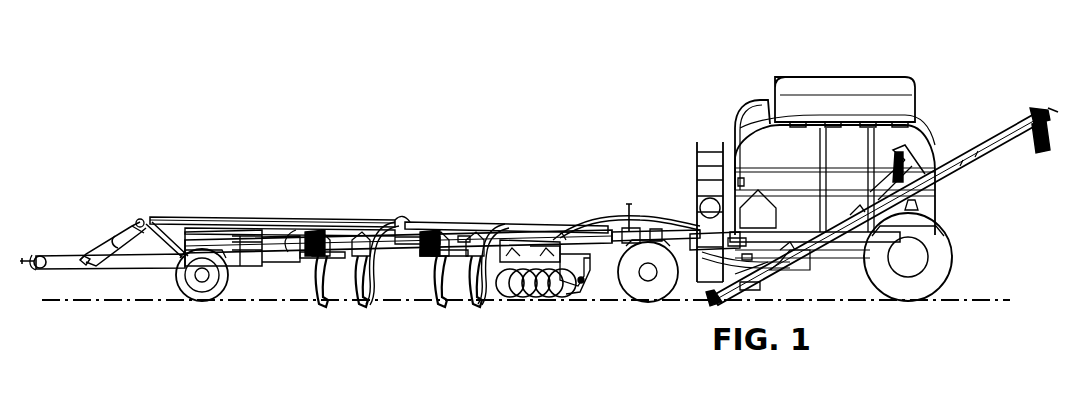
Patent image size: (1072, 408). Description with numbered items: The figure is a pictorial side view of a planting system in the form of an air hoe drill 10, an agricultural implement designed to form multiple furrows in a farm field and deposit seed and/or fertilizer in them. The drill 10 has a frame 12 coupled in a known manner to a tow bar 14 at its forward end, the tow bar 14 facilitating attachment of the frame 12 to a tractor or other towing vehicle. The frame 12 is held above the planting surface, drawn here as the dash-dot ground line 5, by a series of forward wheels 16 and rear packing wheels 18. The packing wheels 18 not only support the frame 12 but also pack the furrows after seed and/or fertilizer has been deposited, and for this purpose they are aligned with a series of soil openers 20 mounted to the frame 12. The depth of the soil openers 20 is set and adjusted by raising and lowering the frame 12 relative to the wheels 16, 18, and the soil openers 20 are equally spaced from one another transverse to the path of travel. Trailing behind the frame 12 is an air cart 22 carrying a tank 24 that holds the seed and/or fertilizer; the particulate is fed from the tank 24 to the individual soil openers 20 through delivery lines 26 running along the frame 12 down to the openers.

The ground surface 5 is at (268, 298).
The air hoe drill 10 is at (518, 116).
The frame 12 is at (456, 238).
The tow bar 14 is at (62, 257).
The forward wheels 16 is at (181, 307).
The rear packing wheels 18 is at (576, 314).
The soil openers 20 is at (316, 314).
The air cart 22 is at (985, 224).
The tank 24 is at (924, 152).
The product delivery hose 26 is at (382, 288).